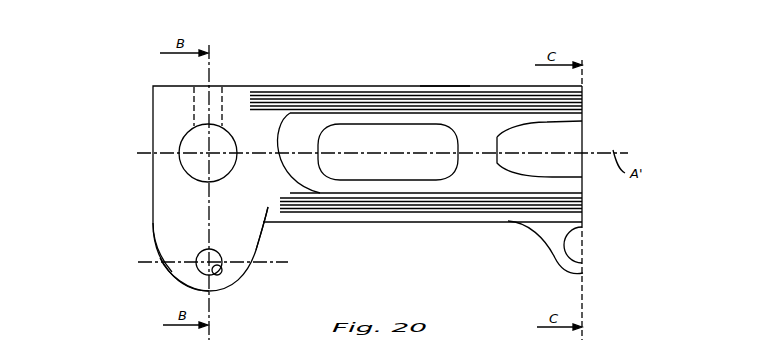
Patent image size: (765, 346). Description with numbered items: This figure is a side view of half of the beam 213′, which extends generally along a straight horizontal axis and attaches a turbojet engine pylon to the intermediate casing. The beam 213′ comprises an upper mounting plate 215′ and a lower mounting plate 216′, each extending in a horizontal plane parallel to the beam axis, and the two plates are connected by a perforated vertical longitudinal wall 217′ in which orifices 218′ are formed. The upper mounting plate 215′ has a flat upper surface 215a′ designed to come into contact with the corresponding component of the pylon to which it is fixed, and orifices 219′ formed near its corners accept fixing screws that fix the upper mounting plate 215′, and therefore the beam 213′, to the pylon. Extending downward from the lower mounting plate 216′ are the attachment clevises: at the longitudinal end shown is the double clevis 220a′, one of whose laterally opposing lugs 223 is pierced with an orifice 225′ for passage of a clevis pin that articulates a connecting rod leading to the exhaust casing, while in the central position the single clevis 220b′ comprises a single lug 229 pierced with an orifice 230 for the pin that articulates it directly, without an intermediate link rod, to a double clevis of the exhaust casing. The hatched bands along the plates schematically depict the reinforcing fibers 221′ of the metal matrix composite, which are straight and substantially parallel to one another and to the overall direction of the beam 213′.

The beam 213′ is at (141, 195).
The upper mounting plate 215′ is at (236, 100).
The flat upper surface 215a′ is at (442, 84).
The lower mounting plate 216′ is at (270, 234).
The perforated vertical longitudinal wall 217′ is at (568, 118).
The orifice 218′ is at (367, 148).
The orifice for fixing screw 219′ is at (203, 105).
The double clevis 220a′ is at (173, 275).
The single clevis 220b′ is at (540, 243).
The reinforcing fibers 221′ is at (292, 95).
The lug 223 is at (177, 231).
The orifice 225′ is at (221, 272).
The lug 229 is at (568, 271).
The orifice 230 is at (578, 249).